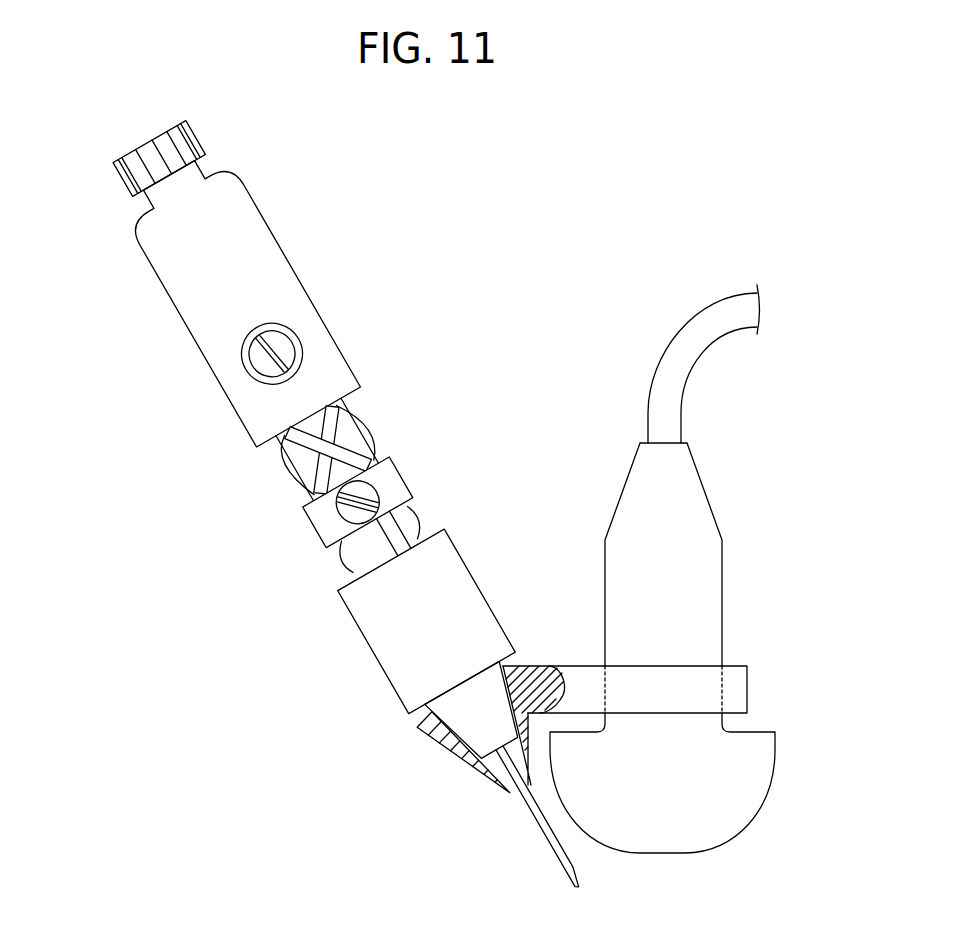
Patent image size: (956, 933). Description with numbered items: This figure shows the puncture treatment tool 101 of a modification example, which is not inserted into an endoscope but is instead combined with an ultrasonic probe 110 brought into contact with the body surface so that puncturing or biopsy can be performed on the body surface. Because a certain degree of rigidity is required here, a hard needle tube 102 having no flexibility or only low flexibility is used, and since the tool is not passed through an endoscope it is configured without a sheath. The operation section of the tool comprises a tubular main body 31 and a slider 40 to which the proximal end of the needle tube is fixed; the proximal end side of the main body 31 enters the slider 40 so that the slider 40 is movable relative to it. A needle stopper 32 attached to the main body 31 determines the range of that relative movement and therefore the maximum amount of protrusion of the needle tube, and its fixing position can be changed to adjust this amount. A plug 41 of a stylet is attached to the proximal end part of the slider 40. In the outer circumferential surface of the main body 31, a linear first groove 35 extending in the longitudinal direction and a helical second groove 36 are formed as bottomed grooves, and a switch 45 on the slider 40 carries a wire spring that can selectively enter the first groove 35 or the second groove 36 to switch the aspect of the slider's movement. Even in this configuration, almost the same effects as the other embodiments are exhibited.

The main body 31 is at (447, 568).
The needle stopper 32 is at (390, 478).
The first groove 35 is at (320, 428).
The second groove 36 is at (340, 548).
The slider 40 is at (288, 285).
The plug 41 is at (194, 135).
The switch 45 is at (237, 334).
The puncture treatment tool 101 is at (306, 488).
The hard needle tube 102 is at (540, 817).
The ultrasonic probe 110 is at (717, 607).